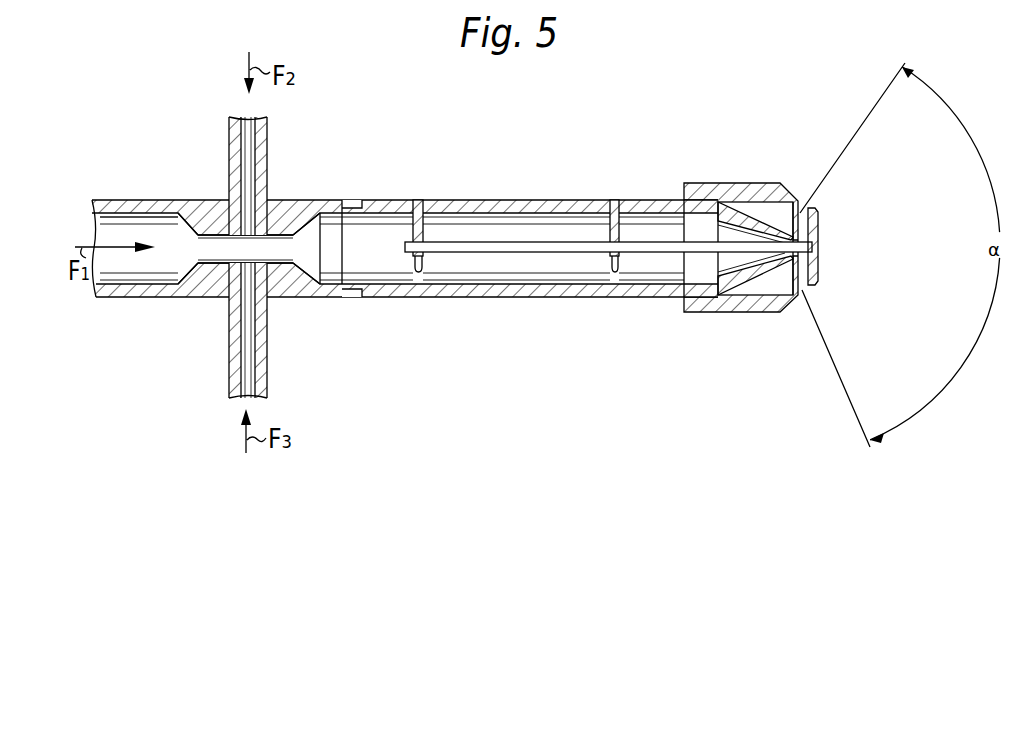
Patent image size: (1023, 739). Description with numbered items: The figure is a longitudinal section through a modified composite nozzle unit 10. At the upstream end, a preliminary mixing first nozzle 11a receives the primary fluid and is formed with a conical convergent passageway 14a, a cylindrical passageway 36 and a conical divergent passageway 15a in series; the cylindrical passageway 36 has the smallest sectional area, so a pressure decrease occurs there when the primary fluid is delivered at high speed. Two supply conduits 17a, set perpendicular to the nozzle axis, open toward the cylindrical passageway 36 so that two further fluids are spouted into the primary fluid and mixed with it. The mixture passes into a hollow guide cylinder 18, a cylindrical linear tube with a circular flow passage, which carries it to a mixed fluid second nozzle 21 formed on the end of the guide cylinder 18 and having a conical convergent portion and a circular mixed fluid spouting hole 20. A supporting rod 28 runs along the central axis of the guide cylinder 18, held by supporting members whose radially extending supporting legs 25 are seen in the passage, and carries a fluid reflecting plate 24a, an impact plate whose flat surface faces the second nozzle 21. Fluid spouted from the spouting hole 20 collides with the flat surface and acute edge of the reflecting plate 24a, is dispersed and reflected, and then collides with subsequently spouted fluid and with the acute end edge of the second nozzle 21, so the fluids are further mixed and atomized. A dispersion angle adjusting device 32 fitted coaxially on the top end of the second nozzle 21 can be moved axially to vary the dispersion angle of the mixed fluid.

The nozzle assembly 10 is at (405, 252).
The preliminary mixing first nozzle 11a is at (167, 297).
The conical convergent passageway 14a is at (192, 230).
The conical divergent passageway 15a is at (312, 258).
The supply conduit 17a is at (268, 165).
The hollow guide cylinder 18 is at (572, 292).
The mixed fluid spouting hole 20 is at (786, 272).
The mixed fluid second nozzle 21 is at (728, 287).
The fluid reflecting plate 24a is at (819, 216).
The supporting legs 25 is at (424, 266).
The supporting rod 28 is at (530, 251).
The dispersion angle adjusting device 32 is at (706, 194).
The cylindrical passageway 36 is at (218, 258).